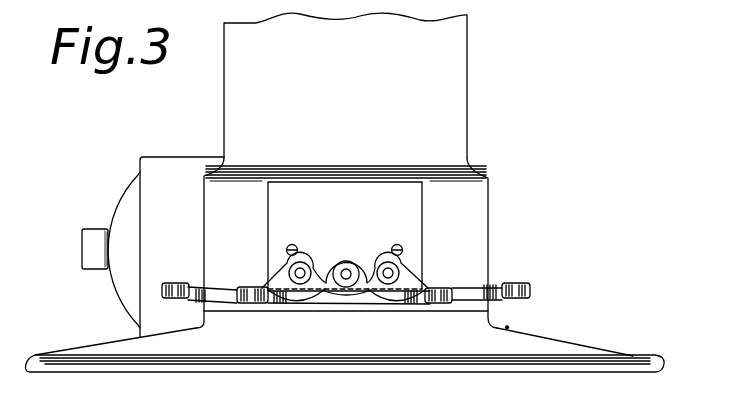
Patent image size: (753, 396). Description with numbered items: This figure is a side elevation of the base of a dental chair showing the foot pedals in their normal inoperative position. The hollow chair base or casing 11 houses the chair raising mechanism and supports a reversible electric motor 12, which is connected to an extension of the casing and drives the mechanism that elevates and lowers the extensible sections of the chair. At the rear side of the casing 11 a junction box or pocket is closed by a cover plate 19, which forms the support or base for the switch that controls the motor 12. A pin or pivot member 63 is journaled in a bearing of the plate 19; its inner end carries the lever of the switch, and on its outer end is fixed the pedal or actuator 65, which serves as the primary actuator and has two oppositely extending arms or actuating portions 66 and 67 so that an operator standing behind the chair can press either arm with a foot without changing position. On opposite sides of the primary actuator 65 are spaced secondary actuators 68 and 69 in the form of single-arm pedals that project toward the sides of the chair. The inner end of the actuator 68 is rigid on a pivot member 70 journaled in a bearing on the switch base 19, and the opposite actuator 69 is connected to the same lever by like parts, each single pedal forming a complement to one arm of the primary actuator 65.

The hollow chair base or casing 11 is at (501, 113).
The reversible electric motor 12 is at (122, 205).
The cover plate 19 is at (447, 205).
The pin or pivot member 63 is at (346, 272).
The pedal or actuator 65 is at (328, 292).
The arm or actuating portion 66 is at (253, 287).
The arm or actuating portion 67 is at (442, 288).
The secondary actuator 68 is at (175, 282).
The secondary actuator 69 is at (520, 283).
The pivot member 70 is at (303, 272).